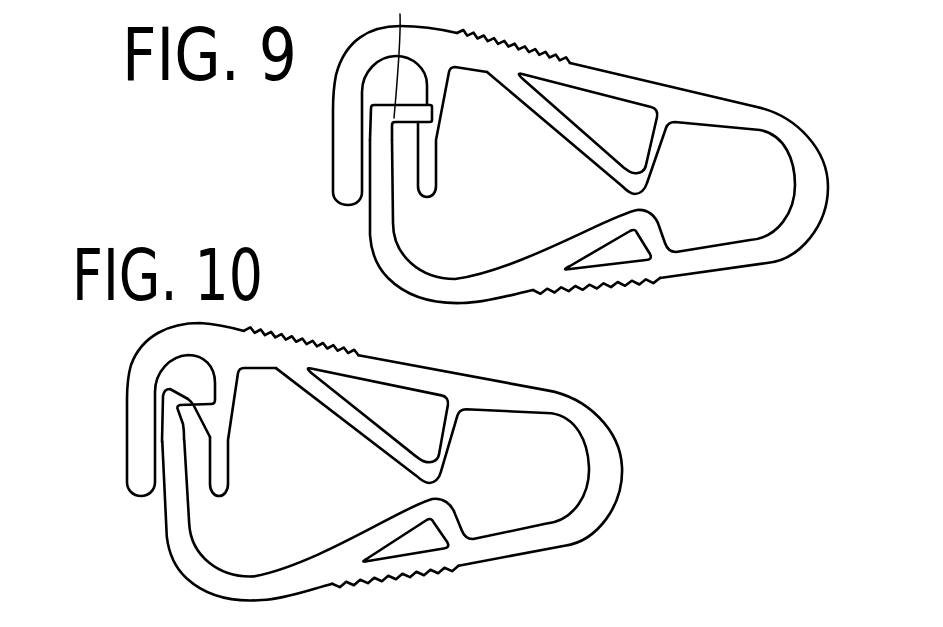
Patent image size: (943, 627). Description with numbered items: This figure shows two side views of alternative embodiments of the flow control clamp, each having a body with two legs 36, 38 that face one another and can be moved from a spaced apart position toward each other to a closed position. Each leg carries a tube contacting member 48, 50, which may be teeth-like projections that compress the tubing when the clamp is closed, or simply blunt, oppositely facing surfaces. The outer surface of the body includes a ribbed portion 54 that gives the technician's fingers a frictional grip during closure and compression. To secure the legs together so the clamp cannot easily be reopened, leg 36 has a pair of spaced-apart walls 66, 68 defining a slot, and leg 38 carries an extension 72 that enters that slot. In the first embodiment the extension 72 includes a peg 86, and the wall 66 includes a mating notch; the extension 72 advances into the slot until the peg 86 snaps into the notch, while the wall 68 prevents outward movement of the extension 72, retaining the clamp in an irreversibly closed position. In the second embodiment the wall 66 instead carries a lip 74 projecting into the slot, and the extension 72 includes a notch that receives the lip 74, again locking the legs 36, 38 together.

In FIG. 9, the leg 36 is at (741, 95).
In FIG. 10, the leg 36 is at (582, 404).
In FIG. 9, the leg 38 is at (769, 265).
In FIG. 10, the leg 38 is at (562, 547).
In FIG. 9, the tube contacting member 48 is at (667, 155).
In FIG. 10, the tube contacting member 48 is at (455, 448).
In FIG. 9, the tube contacting member 50 is at (580, 242).
In FIG. 10, the tube contacting member 50 is at (385, 521).
In FIG. 9, the ribbed portion 54 is at (513, 46).
In FIG. 10, the ribbed portion 54 is at (357, 342).
In FIG. 9, the wall 66 is at (428, 164).
In FIG. 10, the wall 66 is at (227, 467).
In FIG. 9, the wall 68 is at (342, 127).
In FIG. 10, the wall 68 is at (136, 483).
In FIG. 9, the extension 72 is at (387, 250).
In FIG. 10, the extension 72 is at (188, 557).
In FIG. 10, the lip 74 is at (201, 413).
In FIG. 9, the peg 86 is at (400, 14).